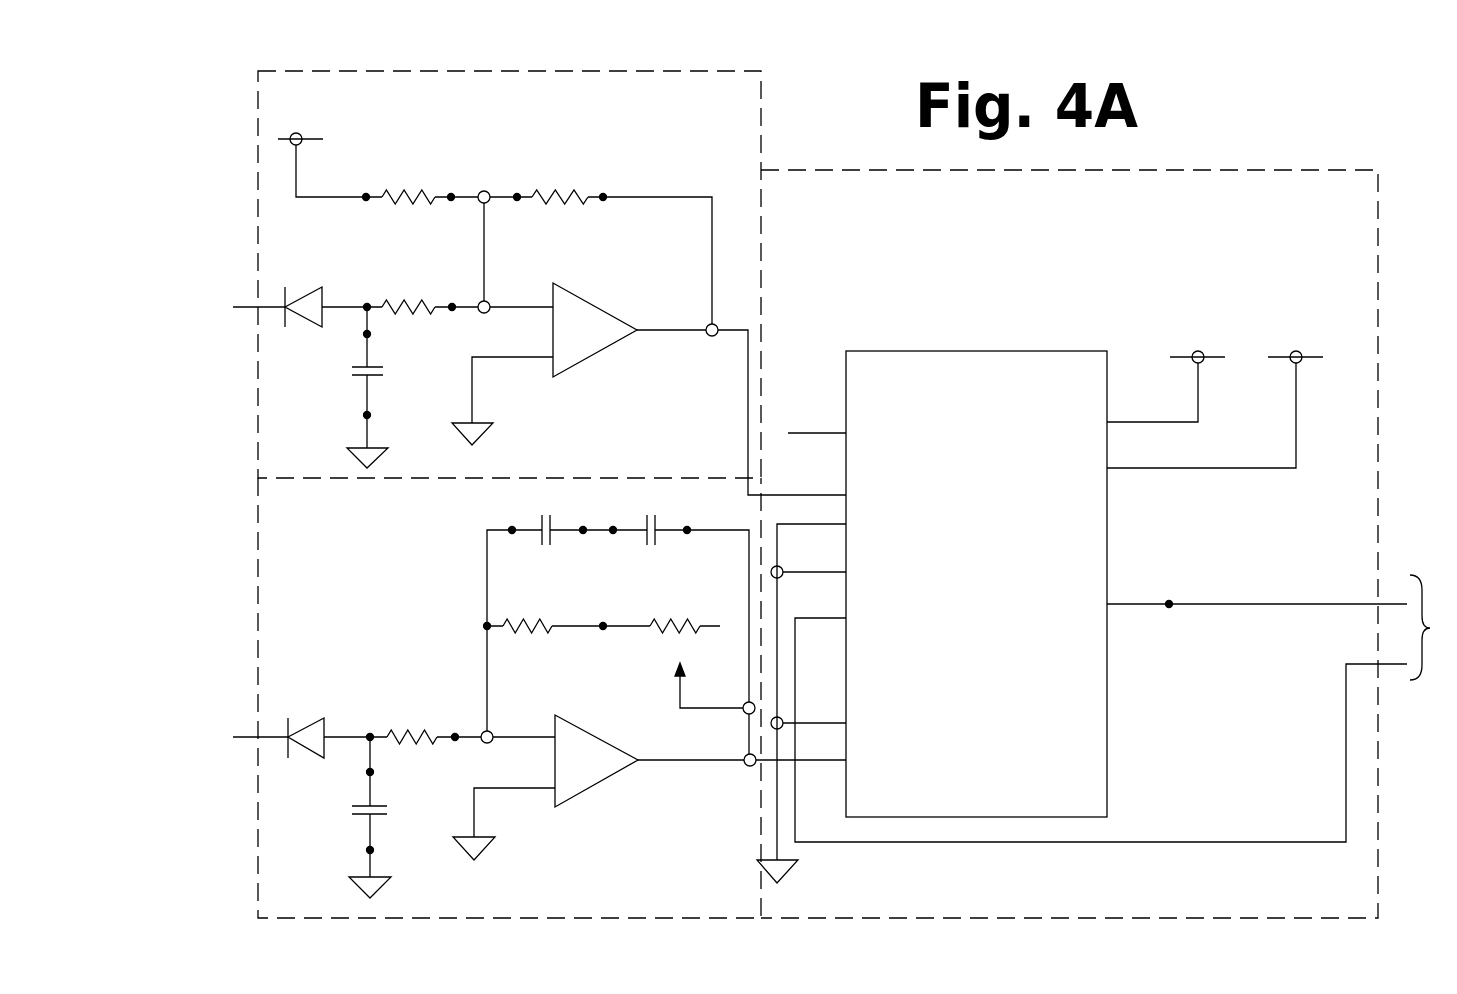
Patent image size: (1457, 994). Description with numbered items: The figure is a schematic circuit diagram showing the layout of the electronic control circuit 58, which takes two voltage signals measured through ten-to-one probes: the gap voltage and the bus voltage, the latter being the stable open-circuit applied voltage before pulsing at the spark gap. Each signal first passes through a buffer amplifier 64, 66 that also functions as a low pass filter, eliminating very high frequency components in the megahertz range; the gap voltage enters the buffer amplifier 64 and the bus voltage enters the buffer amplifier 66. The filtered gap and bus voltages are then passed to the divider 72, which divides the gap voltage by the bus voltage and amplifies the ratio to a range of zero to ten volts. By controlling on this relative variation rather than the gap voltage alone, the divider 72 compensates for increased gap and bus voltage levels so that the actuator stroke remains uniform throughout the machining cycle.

The electronic control circuit 58 is at (1258, 125).
The buffer amplifier 64 is at (552, 698).
The buffer amplifier 66 is at (552, 283).
The divider 72 is at (1107, 544).